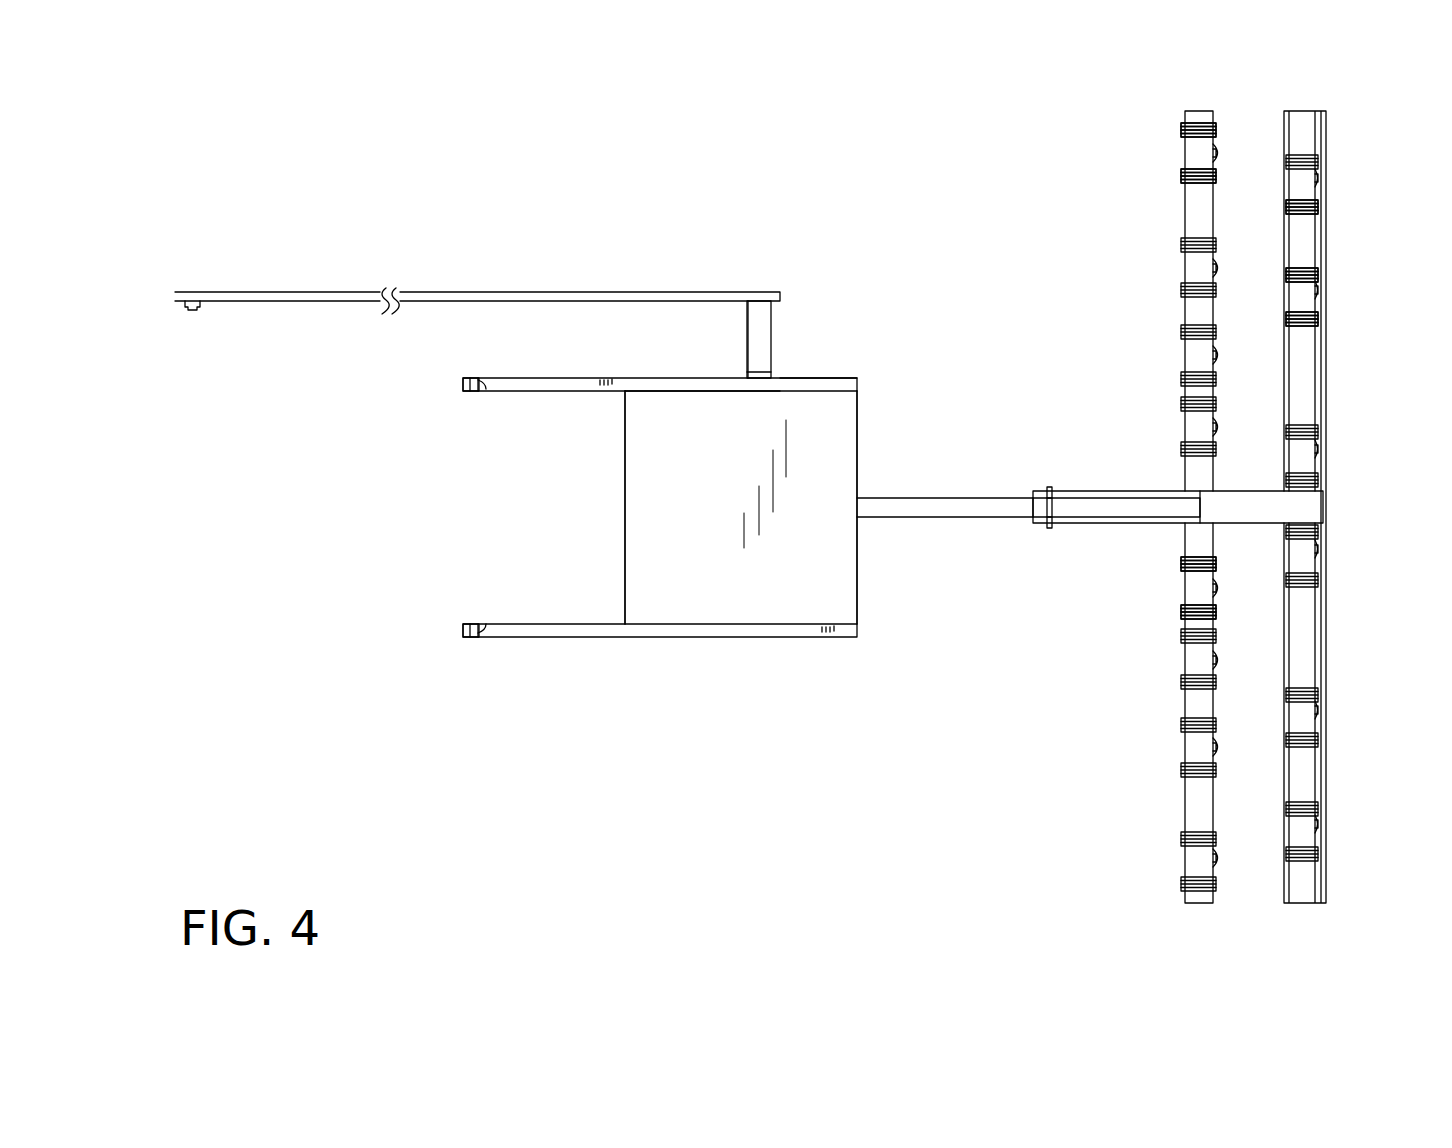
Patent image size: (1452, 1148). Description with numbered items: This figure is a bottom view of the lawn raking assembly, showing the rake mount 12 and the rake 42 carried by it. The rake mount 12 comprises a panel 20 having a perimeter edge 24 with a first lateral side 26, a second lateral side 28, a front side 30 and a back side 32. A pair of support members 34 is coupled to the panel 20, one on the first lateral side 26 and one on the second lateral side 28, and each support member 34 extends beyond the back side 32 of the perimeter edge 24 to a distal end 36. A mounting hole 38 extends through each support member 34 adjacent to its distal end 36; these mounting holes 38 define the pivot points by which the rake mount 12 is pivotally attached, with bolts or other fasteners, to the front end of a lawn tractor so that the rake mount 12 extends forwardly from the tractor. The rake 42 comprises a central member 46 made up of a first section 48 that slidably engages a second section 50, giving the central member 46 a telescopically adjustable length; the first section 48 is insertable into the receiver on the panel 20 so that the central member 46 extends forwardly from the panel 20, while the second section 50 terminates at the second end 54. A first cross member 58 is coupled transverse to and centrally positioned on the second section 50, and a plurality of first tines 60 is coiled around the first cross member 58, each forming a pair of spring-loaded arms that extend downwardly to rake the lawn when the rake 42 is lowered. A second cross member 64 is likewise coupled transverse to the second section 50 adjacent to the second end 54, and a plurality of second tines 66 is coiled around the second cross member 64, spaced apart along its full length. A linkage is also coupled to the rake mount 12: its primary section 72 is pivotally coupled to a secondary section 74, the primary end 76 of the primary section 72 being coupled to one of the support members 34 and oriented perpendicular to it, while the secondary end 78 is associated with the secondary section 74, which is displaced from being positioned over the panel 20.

The rake mount 12 is at (830, 640).
The panel 20 is at (733, 558).
The perimeter edge 24 is at (820, 391).
The first lateral side 26 is at (665, 391).
The second lateral side 28 is at (658, 625).
The front side 30 is at (625, 472).
The back side 32 is at (852, 443).
The support members 34 is at (530, 391).
The distal end 36 is at (463, 383).
The mounting hole 38 is at (497, 388).
The rake 42 is at (1162, 437).
The central member 46 is at (1004, 525).
The first section 48 is at (978, 497).
The second section 50 is at (1115, 491).
The second end 54 is at (1313, 503).
The first cross member 58 is at (1192, 800).
The first tines 60 is at (1183, 176).
The second cross member 64 is at (1297, 135).
The second tines 66 is at (1315, 322).
The primary section 72 is at (768, 330).
The secondary section 74 is at (573, 292).
The primary end 76 is at (747, 378).
The secondary end 78 is at (175, 297).